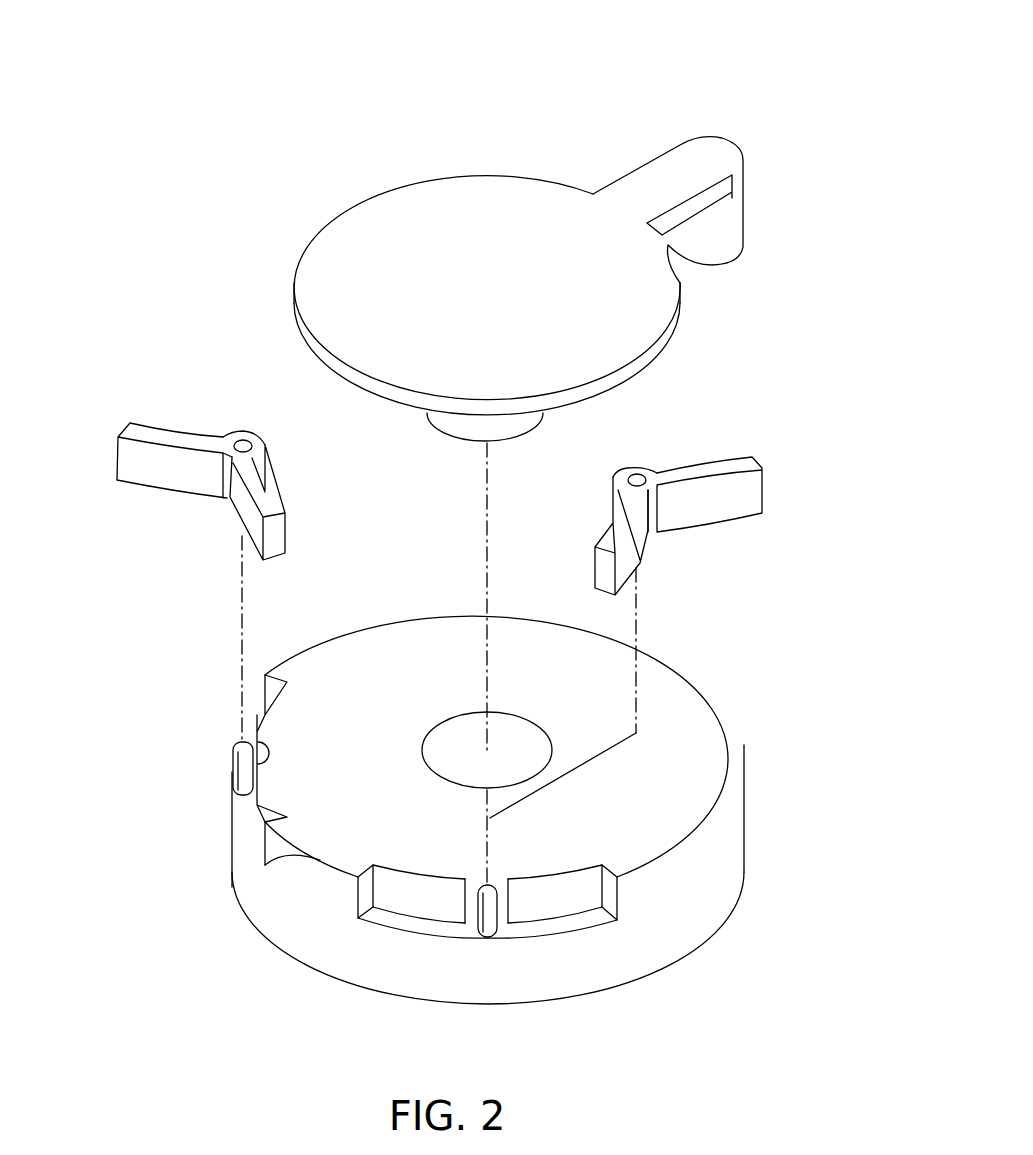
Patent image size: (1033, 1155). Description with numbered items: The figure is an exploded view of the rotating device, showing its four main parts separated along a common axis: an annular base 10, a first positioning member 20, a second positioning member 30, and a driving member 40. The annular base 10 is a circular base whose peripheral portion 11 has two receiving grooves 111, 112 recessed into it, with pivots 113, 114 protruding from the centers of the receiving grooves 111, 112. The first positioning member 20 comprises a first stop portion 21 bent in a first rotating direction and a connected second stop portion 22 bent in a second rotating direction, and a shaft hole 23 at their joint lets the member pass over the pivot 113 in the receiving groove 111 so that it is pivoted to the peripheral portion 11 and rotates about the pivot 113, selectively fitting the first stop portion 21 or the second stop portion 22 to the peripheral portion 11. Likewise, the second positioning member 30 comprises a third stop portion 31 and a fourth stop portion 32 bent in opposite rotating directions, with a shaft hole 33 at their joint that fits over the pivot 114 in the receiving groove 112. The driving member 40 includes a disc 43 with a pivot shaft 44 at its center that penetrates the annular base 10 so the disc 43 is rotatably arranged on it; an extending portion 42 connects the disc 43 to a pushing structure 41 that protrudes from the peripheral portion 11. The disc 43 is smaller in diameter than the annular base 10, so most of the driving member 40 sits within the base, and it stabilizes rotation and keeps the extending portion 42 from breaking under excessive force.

The annular base 10 is at (377, 657).
The peripheral portion 11 is at (285, 924).
The receiving groove 111 is at (247, 813).
The receiving groove 112 is at (412, 925).
The pivot 113 is at (233, 770).
The pivot 114 is at (483, 937).
The first positioning member 20 is at (128, 390).
The first stop portion 21 is at (267, 500).
The second stop portion 22 is at (182, 465).
The shaft hole 23 is at (243, 438).
The second positioning member 30 is at (787, 435).
The third stop portion 31 is at (718, 493).
The fourth stop portion 32 is at (613, 533).
The shaft hole 33 is at (642, 470).
The driving member 40 is at (750, 68).
The pushing structure 41 is at (718, 232).
The extending portion 42 is at (643, 193).
The disc 43 is at (543, 210).
The pivot shaft 44 is at (490, 423).